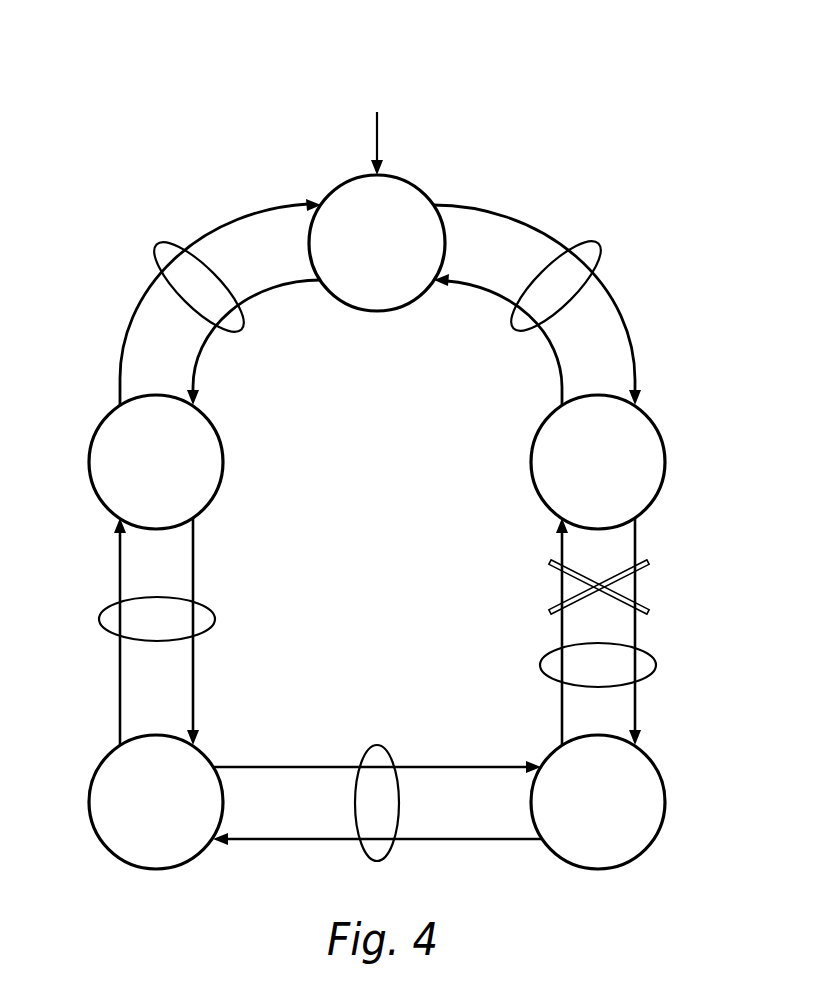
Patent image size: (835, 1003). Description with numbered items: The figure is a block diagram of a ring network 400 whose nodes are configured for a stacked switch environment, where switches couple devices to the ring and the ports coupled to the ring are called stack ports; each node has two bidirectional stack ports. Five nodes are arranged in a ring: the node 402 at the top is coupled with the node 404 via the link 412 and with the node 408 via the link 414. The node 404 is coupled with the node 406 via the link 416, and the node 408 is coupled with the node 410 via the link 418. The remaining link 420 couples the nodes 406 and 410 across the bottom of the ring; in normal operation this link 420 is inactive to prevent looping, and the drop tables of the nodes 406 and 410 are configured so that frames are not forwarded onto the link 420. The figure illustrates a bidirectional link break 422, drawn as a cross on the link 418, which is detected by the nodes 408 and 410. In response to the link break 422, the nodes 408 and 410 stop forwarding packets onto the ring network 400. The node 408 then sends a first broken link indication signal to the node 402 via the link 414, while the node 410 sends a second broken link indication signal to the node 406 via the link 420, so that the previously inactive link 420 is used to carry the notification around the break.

The ring network 400 is at (204, 50).
The node 402 is at (359, 255).
The node 404 is at (139, 477).
The node 406 is at (139, 816).
The node 408 is at (581, 477).
The node 410 is at (581, 816).
The link 412 is at (160, 244).
The link 414 is at (593, 248).
The link 416 is at (98, 620).
The link 418 is at (655, 663).
The link 420 is at (377, 745).
The bidirectional link failure 422 is at (568, 580).